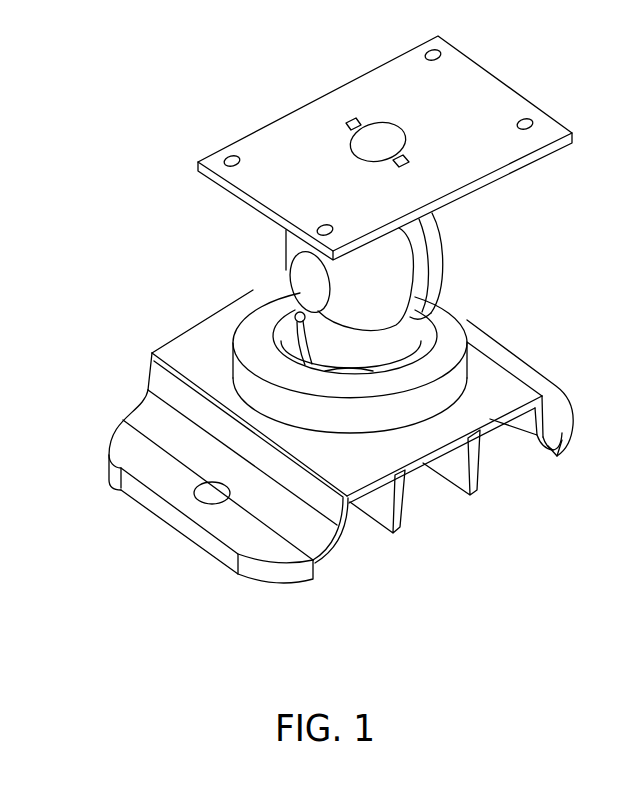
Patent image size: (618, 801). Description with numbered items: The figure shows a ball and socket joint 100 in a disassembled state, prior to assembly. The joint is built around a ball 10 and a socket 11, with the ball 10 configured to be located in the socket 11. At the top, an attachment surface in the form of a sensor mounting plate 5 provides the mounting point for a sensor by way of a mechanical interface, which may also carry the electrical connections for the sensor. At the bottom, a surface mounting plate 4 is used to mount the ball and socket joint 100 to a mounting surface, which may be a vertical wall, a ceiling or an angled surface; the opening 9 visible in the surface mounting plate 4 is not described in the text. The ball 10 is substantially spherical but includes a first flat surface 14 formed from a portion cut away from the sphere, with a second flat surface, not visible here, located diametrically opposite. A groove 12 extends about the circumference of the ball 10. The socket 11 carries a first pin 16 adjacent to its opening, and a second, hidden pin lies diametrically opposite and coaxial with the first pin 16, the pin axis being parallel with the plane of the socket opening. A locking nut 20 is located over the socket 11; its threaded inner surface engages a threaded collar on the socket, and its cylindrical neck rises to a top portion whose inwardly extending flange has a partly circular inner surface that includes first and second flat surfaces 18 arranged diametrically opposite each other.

The ball and socket joint 100 is at (126, 91).
The sensor mounting plate 5 is at (468, 90).
The ball 10 is at (428, 234).
The groove 12 is at (422, 265).
The first flat surface 14 is at (302, 273).
The first and second flat surfaces 18 is at (280, 298).
The first pin 16 is at (296, 316).
The socket 11 is at (401, 348).
The locking nut 20 is at (448, 363).
The hole 9 is at (207, 490).
The surface mounting plate 4 is at (228, 528).